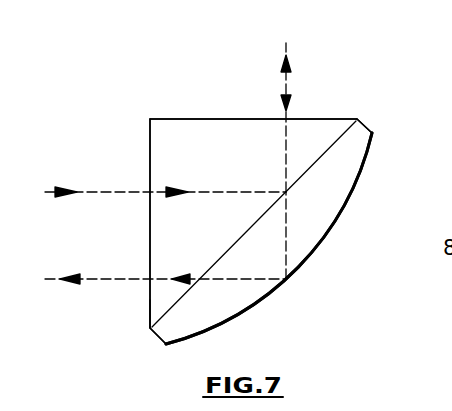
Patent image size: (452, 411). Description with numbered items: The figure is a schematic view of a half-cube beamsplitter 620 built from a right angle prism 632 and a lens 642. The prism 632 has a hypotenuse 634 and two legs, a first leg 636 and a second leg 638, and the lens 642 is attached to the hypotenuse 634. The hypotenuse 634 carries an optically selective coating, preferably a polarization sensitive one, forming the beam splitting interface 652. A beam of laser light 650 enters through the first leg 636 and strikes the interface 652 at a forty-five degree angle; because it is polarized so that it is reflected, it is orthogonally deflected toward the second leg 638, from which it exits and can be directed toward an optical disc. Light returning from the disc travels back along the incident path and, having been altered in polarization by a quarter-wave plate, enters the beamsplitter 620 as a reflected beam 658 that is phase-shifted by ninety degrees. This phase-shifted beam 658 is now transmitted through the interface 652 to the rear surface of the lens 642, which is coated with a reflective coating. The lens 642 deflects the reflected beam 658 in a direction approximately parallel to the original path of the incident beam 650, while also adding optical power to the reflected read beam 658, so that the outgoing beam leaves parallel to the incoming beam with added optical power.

The half-cube beamsplitter 620 is at (304, 276).
The right angle prism 632 is at (141, 158).
The hypotenuse 634 is at (232, 243).
The first leg 636 is at (150, 311).
The second leg 638 is at (318, 118).
The lens 642 is at (333, 162).
The beam splitting interface 652 is at (343, 135).
The beam of laser light 650 is at (286, 55).
The reflected beam 658 is at (283, 102).